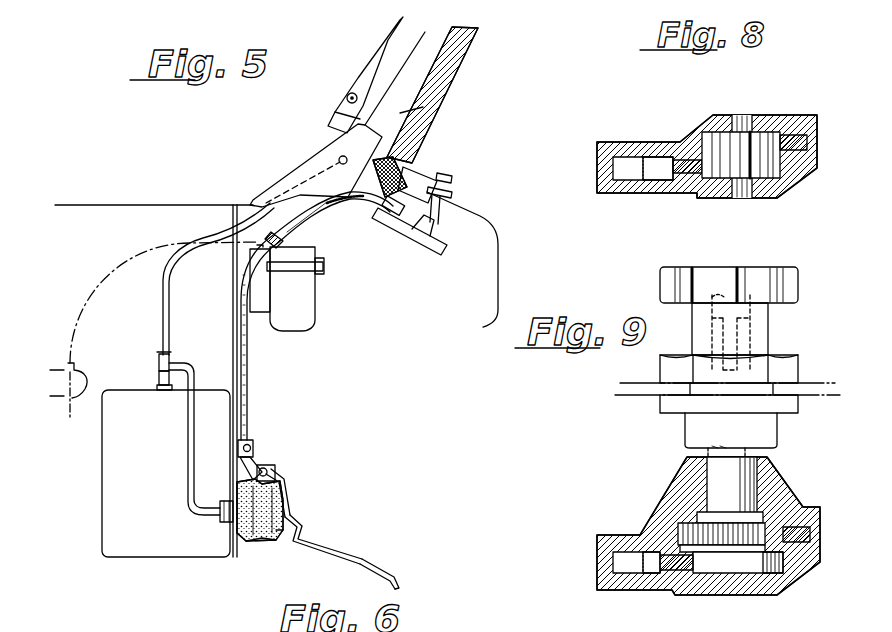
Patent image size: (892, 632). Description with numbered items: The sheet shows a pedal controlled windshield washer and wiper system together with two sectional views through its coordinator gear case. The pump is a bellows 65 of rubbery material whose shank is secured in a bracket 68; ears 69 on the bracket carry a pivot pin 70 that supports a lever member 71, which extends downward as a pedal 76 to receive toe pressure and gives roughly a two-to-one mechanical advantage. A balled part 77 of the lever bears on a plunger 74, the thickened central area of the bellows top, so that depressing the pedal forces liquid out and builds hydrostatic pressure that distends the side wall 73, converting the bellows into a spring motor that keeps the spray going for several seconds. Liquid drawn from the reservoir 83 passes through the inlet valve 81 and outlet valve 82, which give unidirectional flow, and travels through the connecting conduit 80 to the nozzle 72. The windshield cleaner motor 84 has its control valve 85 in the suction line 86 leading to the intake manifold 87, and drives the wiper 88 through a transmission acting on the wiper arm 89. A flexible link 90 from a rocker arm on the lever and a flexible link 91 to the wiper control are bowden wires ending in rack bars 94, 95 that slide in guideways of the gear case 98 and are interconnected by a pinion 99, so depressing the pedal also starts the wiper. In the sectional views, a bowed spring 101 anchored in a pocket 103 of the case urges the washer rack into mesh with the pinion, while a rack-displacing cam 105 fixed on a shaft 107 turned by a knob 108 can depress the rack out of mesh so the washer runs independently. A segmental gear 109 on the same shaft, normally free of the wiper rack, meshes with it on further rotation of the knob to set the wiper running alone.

In FIG. 5, the bellows 65 is at (251, 540).
In FIG. 5, the bracket 68 is at (261, 459).
In FIG. 5, the ears 69 is at (270, 470).
In FIG. 5, the pivot pin 70 is at (276, 473).
In FIG. 5, the lever member 71 is at (285, 486).
In FIG. 5, the nozzle 72 is at (338, 160).
In FIG. 5, the side wall 73 is at (269, 540).
In FIG. 5, the plunger 74 is at (279, 532).
In FIG. 5, the pedal 76 is at (364, 565).
In FIG. 5, the balled part 77 is at (291, 521).
In FIG. 5, the connecting conduit 80 is at (166, 291).
In FIG. 5, the inlet valve 81 is at (157, 380).
In FIG. 5, the outlet valve 82 is at (158, 356).
In FIG. 5, the reservoir 83 is at (160, 482).
In FIG. 5, the windshield cleaner motor 84 is at (278, 304).
In FIG. 5, the control valve 85 is at (272, 240).
In FIG. 5, the suction line 86 is at (120, 266).
In FIG. 5, the intake manifold 87 is at (70, 408).
In FIG. 5, the wiper 88 is at (452, 38).
In FIG. 5, the wiper arm 89 is at (347, 81).
In FIG. 5, the flexible link 90 is at (244, 471).
In FIG. 5, the flexible link 91 is at (390, 211).
In FIG. 8, the rack bar 94 is at (685, 162).
In FIG. 9, the rack bar 94 is at (674, 567).
In FIG. 8, the rack bar 95 is at (800, 148).
In FIG. 9, the rack bar 95 is at (810, 534).
In FIG. 5, the gear case 98 is at (432, 248).
In FIG. 8, the gear case 98 is at (818, 125).
In FIG. 9, the gear case 98 is at (811, 507).
In FIG. 8, the pinion 99 is at (758, 143).
In FIG. 8, the bowed spring 101 is at (655, 177).
In FIG. 9, the bowed spring 101 is at (648, 558).
In FIG. 8, the pocket 103 is at (623, 163).
In FIG. 9, the pocket 103 is at (620, 563).
In FIG. 9, the rack-displacing cam 105 is at (765, 563).
In FIG. 9, the shaft 107 is at (713, 477).
In FIG. 5, the knob 108 is at (444, 176).
In FIG. 9, the knob 108 is at (710, 270).
In FIG. 9, the segmental gear 109 is at (723, 537).